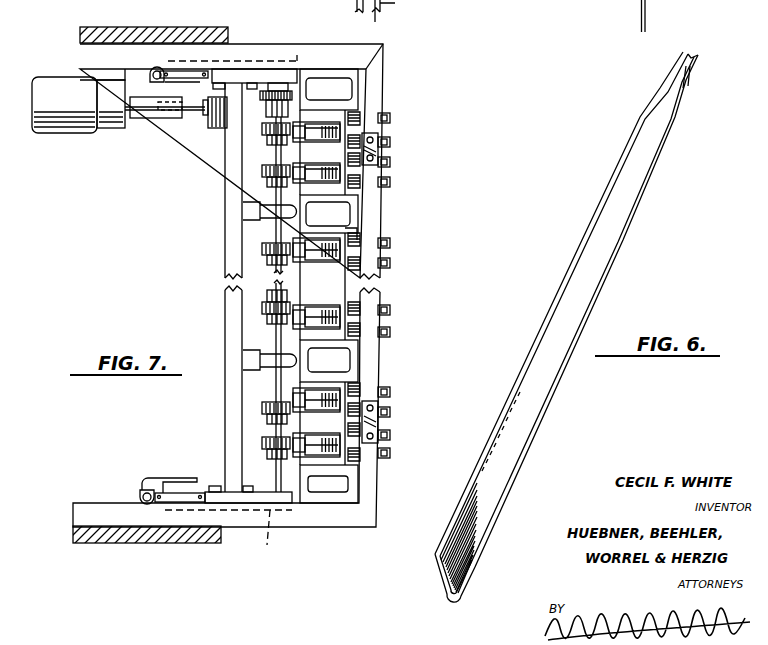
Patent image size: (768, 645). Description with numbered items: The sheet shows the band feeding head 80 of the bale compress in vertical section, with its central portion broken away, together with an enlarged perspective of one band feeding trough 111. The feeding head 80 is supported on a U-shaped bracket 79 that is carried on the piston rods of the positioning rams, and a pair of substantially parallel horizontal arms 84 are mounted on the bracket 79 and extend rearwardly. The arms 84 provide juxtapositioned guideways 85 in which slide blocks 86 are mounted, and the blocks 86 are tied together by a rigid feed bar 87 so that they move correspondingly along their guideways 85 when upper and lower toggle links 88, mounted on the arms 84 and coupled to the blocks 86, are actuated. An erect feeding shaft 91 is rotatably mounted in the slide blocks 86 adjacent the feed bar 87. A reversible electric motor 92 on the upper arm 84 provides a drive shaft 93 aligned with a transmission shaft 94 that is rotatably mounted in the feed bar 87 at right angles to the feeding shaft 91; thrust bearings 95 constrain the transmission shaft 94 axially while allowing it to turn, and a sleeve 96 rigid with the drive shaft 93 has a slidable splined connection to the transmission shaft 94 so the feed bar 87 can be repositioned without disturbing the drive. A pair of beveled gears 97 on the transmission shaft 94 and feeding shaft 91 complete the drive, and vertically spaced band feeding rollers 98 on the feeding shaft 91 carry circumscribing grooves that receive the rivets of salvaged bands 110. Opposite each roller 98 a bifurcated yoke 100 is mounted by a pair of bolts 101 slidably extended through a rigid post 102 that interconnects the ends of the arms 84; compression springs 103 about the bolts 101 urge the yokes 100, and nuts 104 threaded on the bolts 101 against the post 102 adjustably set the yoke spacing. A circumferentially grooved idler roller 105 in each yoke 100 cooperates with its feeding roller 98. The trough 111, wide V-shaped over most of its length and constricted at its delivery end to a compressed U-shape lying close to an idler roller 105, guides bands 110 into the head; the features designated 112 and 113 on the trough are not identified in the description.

In FIG. 7, the U-shaped bracket 79 is at (120, 30).
In FIG. 7, the feeding head 80 is at (385, 78).
In FIG. 7, the arms 84 is at (272, 48).
In FIG. 7, the guideways 85 is at (238, 61).
In FIG. 7, the slide blocks 86 is at (226, 75).
In FIG. 7, the feed bar 87 is at (233, 253).
In FIG. 7, the toggle links 88 is at (180, 72).
In FIG. 7, the feeding shaft 91 is at (262, 296).
In FIG. 7, the reversible electric motor 92 is at (77, 123).
In FIG. 7, the drive shaft 93 is at (125, 124).
In FIG. 7, the transmission shaft 94 is at (197, 112).
In FIG. 7, the thrust bearings 95 is at (218, 126).
In FIG. 7, the sleeve 96 is at (150, 110).
In FIG. 7, the beveled gears 97 is at (268, 85).
In FIG. 7, the band feeding rollers 98 is at (263, 132).
In FIG. 7, the bifurcated yoke 100 is at (343, 129).
In FIG. 7, the bolts 101 is at (353, 115).
In FIG. 7, the rigid post 102 is at (373, 213).
In FIG. 7, the compression springs 103 is at (357, 234).
In FIG. 7, the nuts 104 is at (390, 161).
In FIG. 7, the idler roller 105 is at (313, 170).
In FIG. 7, the bands 110 is at (388, 11).
In FIG. 6, the bands 110 is at (640, 13).
In FIG. 6, the feeding trough 111 is at (622, 252).
In FIG. 6, the comb tool handle end 112 is at (541, 420).
In FIG. 6, the comb tool tines 113 is at (688, 92).